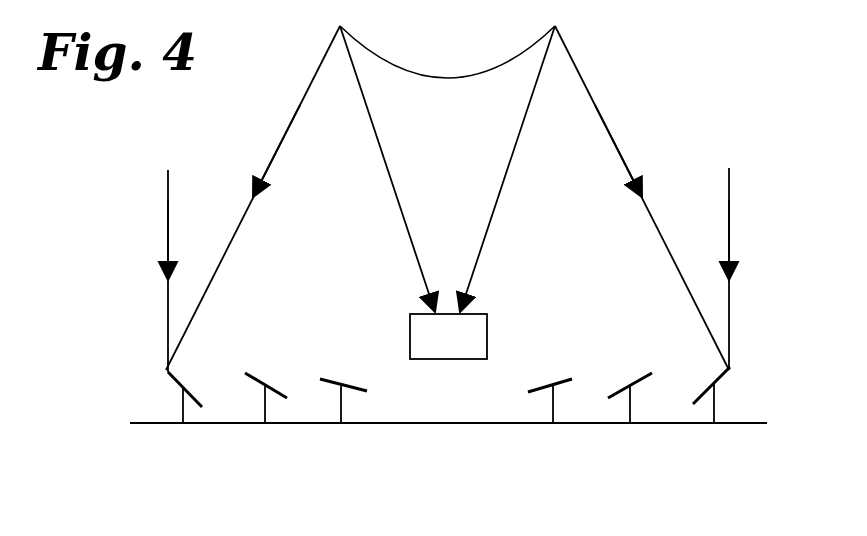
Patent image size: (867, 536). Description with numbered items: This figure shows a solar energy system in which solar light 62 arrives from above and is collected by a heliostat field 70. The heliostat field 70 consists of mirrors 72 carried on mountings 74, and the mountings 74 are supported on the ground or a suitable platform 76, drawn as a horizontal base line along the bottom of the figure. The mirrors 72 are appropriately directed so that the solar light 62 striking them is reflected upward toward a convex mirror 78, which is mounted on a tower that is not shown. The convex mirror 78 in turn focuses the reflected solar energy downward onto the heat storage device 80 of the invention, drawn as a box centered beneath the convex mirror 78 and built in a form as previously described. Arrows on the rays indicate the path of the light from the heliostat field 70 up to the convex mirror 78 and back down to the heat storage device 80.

The solar light 62 is at (168, 218).
The heliostat field 70 is at (289, 312).
The mirrors 72 is at (196, 398).
The mountings 74 is at (330, 425).
The platform 76 is at (458, 425).
The convex mirror 78 is at (481, 76).
The heat storage device 80 is at (487, 325).